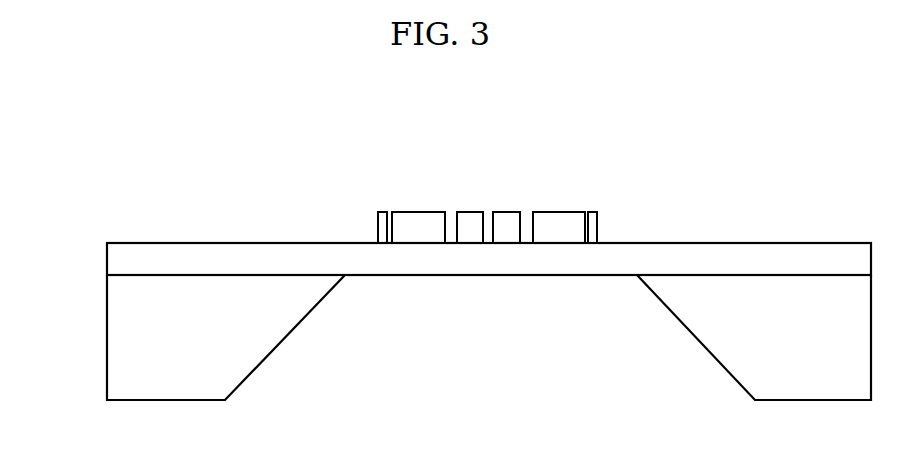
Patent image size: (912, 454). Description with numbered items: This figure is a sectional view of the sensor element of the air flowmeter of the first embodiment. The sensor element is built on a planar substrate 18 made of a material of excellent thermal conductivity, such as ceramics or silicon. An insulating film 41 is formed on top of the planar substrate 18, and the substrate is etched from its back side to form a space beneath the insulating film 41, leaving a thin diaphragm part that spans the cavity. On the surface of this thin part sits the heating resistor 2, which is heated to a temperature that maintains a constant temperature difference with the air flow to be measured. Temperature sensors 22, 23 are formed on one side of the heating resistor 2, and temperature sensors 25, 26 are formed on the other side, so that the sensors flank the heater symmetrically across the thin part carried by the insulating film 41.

The insulating film 41 is at (137, 258).
The planar substrate 18 is at (137, 348).
The temperature sensor 23 is at (385, 228).
The temperature sensor 22 is at (433, 223).
The heating resistor 2 is at (466, 203).
The temperature sensor 25 is at (542, 223).
The temperature sensor 26 is at (596, 218).